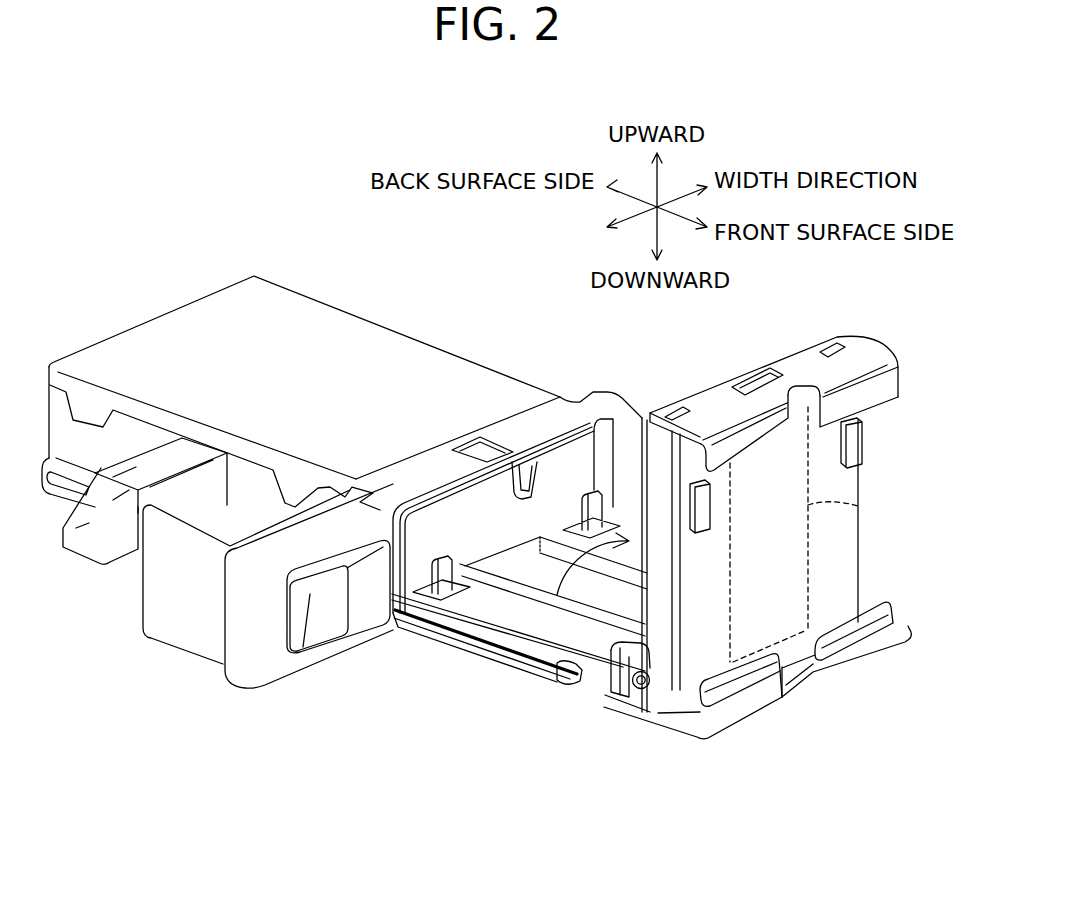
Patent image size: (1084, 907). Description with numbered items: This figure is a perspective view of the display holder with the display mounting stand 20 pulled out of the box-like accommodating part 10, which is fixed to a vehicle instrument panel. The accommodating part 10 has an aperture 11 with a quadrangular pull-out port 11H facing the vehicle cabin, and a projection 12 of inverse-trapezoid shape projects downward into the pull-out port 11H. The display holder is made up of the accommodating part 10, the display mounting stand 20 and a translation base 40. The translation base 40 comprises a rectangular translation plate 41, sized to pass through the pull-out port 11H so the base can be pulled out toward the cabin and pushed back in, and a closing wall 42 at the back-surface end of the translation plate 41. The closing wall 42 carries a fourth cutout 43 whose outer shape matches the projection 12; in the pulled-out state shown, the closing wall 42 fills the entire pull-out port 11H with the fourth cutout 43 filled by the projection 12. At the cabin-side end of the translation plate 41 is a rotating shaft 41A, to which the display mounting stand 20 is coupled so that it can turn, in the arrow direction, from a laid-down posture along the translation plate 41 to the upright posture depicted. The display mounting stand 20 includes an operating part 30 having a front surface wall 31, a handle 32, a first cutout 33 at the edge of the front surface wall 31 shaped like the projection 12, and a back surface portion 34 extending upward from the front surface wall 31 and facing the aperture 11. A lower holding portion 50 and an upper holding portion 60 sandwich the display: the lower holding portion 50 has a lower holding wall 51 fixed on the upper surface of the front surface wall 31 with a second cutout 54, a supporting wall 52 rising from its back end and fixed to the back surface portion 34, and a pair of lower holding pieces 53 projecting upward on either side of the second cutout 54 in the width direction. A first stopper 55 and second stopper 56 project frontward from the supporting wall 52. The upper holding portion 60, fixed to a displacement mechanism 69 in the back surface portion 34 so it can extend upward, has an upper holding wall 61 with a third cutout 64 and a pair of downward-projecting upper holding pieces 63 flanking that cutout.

The accommodating part 10 is at (355, 320).
The aperture 11 is at (499, 470).
The pull-out port 11H is at (417, 516).
The projection 12 is at (481, 448).
The display mounting stand 20 is at (438, 712).
The operating part 30 is at (757, 717).
The front surface wall 31 is at (704, 742).
The handle 32 is at (781, 705).
The first cutout 33 is at (800, 690).
The back surface portion 34 is at (640, 445).
The translation base 40 is at (510, 599).
The translation plate 41 is at (487, 652).
The rotating shaft 41A is at (637, 703).
The closing wall 42 is at (413, 500).
The fourth cutout 43 is at (535, 457).
The lower holding portion 50 is at (814, 556).
The lower holding wall 51 is at (813, 632).
The supporting wall 52 is at (858, 528).
The lower holding pieces 53 is at (720, 668).
The second cutout 54 is at (783, 660).
The first stopper 55 is at (700, 533).
The second stopper 56 is at (863, 450).
The upper holding portion 60 is at (790, 398).
The upper holding wall 61 is at (810, 350).
The upper holding pieces 63 is at (744, 457).
The third cutout 64 is at (796, 412).
The displacement mechanism 69 is at (860, 507).